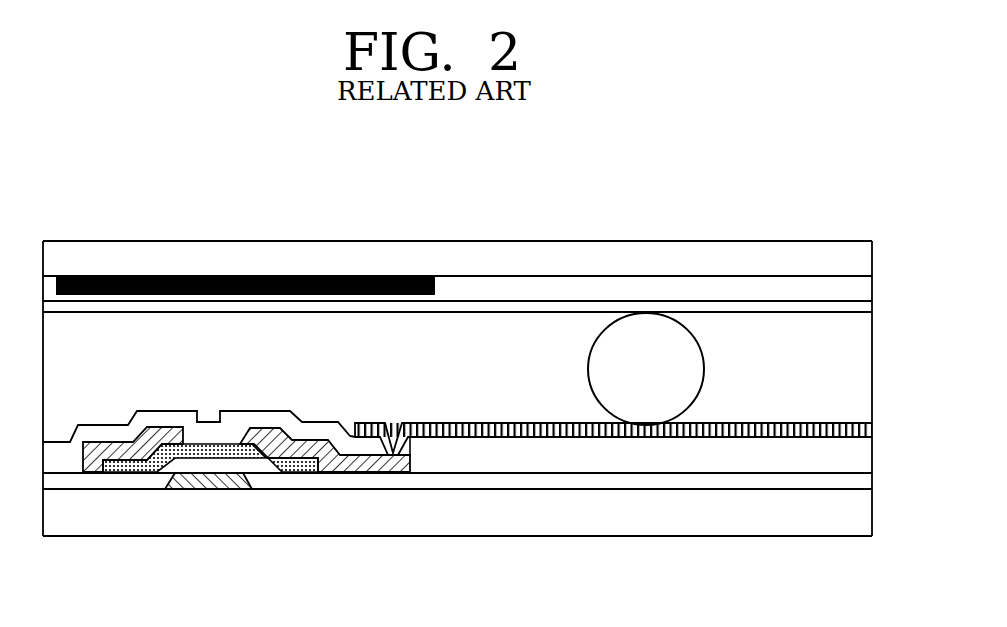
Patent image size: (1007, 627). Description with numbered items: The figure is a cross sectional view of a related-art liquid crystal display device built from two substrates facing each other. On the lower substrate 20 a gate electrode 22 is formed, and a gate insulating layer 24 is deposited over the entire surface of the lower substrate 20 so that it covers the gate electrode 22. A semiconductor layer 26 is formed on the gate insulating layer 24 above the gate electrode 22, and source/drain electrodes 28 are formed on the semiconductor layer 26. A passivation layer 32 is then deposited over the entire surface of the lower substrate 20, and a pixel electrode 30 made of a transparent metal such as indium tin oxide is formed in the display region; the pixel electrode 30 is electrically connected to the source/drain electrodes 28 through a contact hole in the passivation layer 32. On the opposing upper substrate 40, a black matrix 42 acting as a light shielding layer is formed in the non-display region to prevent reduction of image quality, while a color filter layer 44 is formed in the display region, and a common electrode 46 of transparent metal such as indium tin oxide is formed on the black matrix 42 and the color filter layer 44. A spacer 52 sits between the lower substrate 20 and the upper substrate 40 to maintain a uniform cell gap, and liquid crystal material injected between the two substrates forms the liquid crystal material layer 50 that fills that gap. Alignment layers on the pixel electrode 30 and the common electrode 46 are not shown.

The lower substrate 20 is at (872, 522).
The gate electrode 22 is at (210, 489).
The gate insulating layer 24 is at (872, 486).
The semiconductor layer 26 is at (293, 473).
The source/drain electrodes 28 is at (94, 473).
The pixel electrode 30 is at (872, 430).
The passivation layer 32 is at (872, 461).
The upper substrate 40 is at (872, 255).
The black matrix 42 is at (373, 276).
The color filter layer 44 is at (872, 287).
The common electrode 46 is at (872, 312).
The liquid crystal material layer 50 is at (872, 365).
The spacer 52 is at (645, 322).